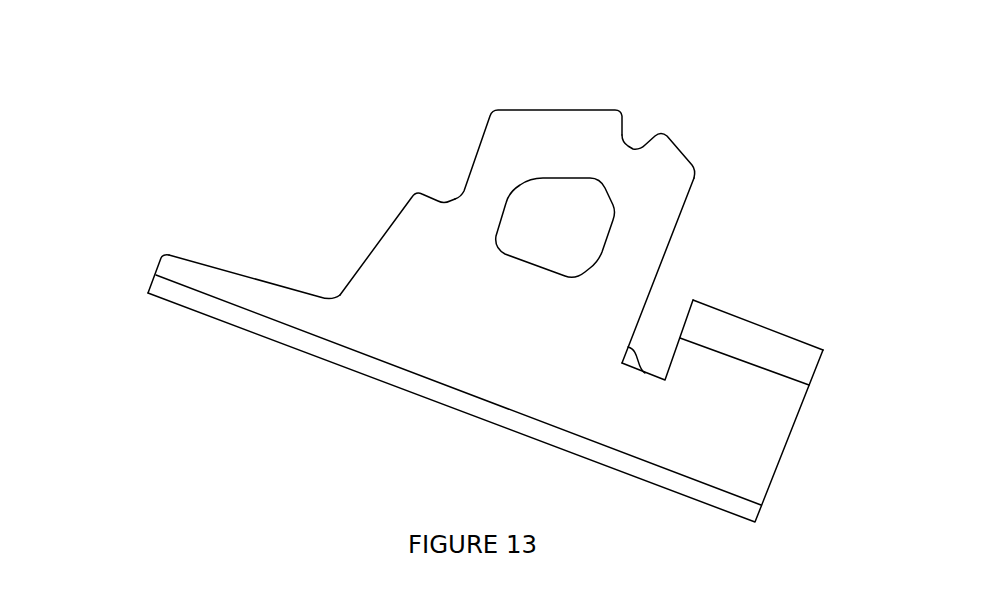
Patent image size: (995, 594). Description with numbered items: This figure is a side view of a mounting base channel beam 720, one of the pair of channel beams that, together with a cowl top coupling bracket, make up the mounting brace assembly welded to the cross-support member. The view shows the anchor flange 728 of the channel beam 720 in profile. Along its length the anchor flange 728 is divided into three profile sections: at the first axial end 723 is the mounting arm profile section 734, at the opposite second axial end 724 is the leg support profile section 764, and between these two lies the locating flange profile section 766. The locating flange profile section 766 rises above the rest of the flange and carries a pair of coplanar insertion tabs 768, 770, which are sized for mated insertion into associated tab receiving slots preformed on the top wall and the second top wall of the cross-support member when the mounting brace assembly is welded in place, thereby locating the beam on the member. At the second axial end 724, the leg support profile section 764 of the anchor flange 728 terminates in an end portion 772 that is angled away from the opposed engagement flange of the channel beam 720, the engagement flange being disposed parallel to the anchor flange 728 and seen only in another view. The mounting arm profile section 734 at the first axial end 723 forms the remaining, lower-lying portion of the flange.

The mounting base channel beam 720 is at (486, 285).
The first axial end 723 is at (157, 275).
The second axial end 724 is at (782, 460).
The anchor flange 728 is at (338, 254).
The mounting arm profile section 734 is at (297, 310).
The leg support profile section 764 is at (767, 415).
The locating flange profile section 766 is at (660, 198).
The insertion tab 768 is at (660, 150).
The insertion tab 770 is at (550, 123).
The end portion 772 is at (748, 333).